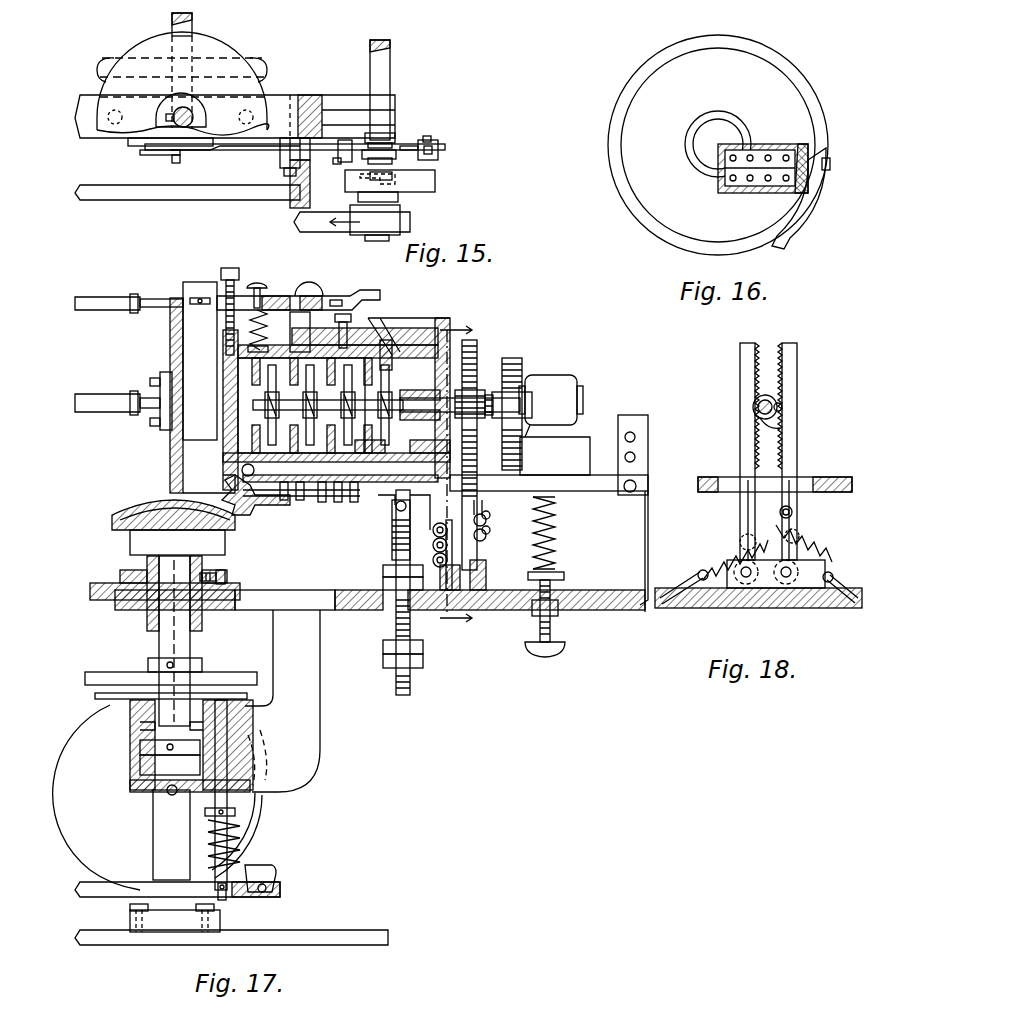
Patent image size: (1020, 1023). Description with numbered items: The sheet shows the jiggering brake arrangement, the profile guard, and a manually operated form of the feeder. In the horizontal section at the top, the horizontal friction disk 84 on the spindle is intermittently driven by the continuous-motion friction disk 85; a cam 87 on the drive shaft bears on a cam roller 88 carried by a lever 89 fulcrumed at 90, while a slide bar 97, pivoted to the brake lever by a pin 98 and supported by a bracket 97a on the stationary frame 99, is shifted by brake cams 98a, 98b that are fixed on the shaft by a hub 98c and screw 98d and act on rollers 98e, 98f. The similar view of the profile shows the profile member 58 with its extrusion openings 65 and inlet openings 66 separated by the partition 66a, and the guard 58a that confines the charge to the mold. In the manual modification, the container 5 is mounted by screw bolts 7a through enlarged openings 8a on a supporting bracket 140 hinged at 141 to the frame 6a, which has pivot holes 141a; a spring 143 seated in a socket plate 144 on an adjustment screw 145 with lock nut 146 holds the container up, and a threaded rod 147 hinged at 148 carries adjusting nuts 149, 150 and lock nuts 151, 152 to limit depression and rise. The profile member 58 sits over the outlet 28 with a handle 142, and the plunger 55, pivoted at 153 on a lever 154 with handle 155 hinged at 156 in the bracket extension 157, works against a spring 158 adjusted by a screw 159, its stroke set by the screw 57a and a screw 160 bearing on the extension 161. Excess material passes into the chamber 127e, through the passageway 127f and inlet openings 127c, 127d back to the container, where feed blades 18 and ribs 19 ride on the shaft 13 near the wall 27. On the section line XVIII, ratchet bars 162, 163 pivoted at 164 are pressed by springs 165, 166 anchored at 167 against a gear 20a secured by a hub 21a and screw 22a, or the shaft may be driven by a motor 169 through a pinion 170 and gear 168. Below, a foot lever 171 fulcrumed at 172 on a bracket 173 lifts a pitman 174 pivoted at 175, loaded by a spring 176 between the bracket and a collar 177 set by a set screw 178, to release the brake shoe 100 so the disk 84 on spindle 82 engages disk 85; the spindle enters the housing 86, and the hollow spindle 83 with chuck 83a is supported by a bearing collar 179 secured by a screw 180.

In FIG. 15, the horizontal friction disk 84 is at (213, 50).
In FIG. 17, the horizontal friction disk 84 is at (248, 668).
In FIG. 15, the continuous-motion friction disk 85 is at (262, 62).
In FIG. 17, the continuous-motion friction disk 85 is at (275, 832).
In FIG. 15, the stationary frame 99 is at (282, 97).
In FIG. 15, the pin 98 is at (170, 158).
In FIG. 15, the slide bar 97 is at (228, 150).
In FIG. 15, the bracket 97a is at (280, 163).
In FIG. 15, the brake cam 98a is at (432, 155).
In FIG. 15, the brake cam 98b is at (398, 148).
In FIG. 15, the hub 98c is at (390, 136).
In FIG. 15, the screw 98d is at (385, 118).
In FIG. 15, the roller 98e is at (335, 160).
In FIG. 15, the roller 98f is at (440, 148).
In FIG. 15, the cam roller 88 is at (395, 185).
In FIG. 15, the cam 87 is at (425, 200).
In FIG. 15, the lever 89 is at (270, 168).
In FIG. 15, the fulcrum 90 is at (292, 205).
In FIG. 16, the profile member 58 is at (722, 186).
In FIG. 17, the profile member 58 is at (180, 336).
In FIG. 16, the retaining member or guard 58a is at (785, 242).
In FIG. 16, the inlet openings 66 is at (768, 150).
In FIG. 16, the wall or partition 66a is at (745, 160).
In FIG. 16, the feed or extrusion openings 65 is at (752, 182).
In FIG. 17, the handle portion 155 is at (95, 297).
In FIG. 17, the lever 154 is at (160, 300).
In FIG. 17, the pivot 153 is at (198, 298).
In FIG. 17, the screw 57a is at (232, 268).
In FIG. 17, the screw 159 is at (258, 283).
In FIG. 17, the spring 158 is at (288, 310).
In FIG. 17, the bifurcated bracket extension 157 is at (312, 296).
In FIG. 17, the hinge 156 is at (320, 296).
In FIG. 17, the extension 161 is at (348, 298).
In FIG. 17, the screw 160 is at (352, 318).
In FIG. 17, the container 5 is at (438, 297).
In FIG. 17, the housing wall 27 is at (336, 393).
In FIG. 17, the section line XVIII— XVIII is at (468, 466).
In FIG. 17, the feed blades 18 is at (276, 355).
In FIG. 17, the ribs 19 is at (372, 372).
In FIG. 17, the shaft 13 is at (418, 400).
In FIG. 17, the ratchet bar 162 is at (478, 358).
In FIG. 18, the ratchet bar 162 is at (740, 355).
In FIG. 17, the gear 168 is at (515, 366).
In FIG. 17, the pinion 170 is at (520, 392).
In FIG. 17, the motor 169 is at (568, 390).
In FIG. 17, the plunger 55 is at (200, 361).
In FIG. 17, the handle 142 is at (105, 395).
In FIG. 17, the outlet 28 is at (240, 408).
In FIG. 17, the inlet opening 127d is at (402, 443).
In FIG. 17, the pivot holes 141a is at (636, 438).
In FIG. 17, the pivot 141 is at (638, 485).
In FIG. 17, the supporting bracket 140 is at (583, 482).
In FIG. 18, the supporting bracket 140 is at (708, 492).
In FIG. 17, the spring 143 is at (556, 530).
In FIG. 17, the passageway 127f is at (298, 495).
In FIG. 17, the inlet opening 127c is at (342, 495).
In FIG. 17, the chamber 127e is at (248, 495).
In FIG. 17, the screw bolts 7a is at (378, 496).
In FIG. 17, the enlarged openings 8a is at (420, 496).
In FIG. 17, the hinge 148 is at (392, 540).
In FIG. 17, the lock nut 151 is at (383, 572).
In FIG. 17, the adjusting nut 149 is at (383, 584).
In FIG. 17, the pivot 164 is at (482, 578).
In FIG. 18, the pivot 164 is at (790, 578).
In FIG. 17, the socket plate 144 is at (560, 575).
In FIG. 17, the frame 6a is at (645, 536).
In FIG. 18, the frame 6a is at (712, 608).
In FIG. 17, the chuck 83a is at (128, 553).
In FIG. 17, the bearing collar 179 is at (215, 574).
In FIG. 17, the screw 180 is at (225, 577).
In FIG. 17, the hollow jigger spindle 83 is at (147, 620).
In FIG. 17, the spindle 82 is at (190, 658).
In FIG. 17, the brake shoe 100 is at (248, 695).
In FIG. 17, the pitman 174 is at (230, 728).
In FIG. 17, the housing 86 is at (135, 790).
In FIG. 17, the set screw 178 is at (208, 820).
In FIG. 17, the collar 177 is at (235, 812).
In FIG. 17, the spring 176 is at (242, 848).
In FIG. 17, the bracket 173 is at (272, 872).
In FIG. 17, the foot lever 171 is at (96, 890).
In FIG. 17, the pivot 175 is at (222, 897).
In FIG. 17, the fulcrum 172 is at (262, 897).
In FIG. 17, the threaded rod 147 is at (396, 626).
In FIG. 17, the adjusting nut 150 is at (416, 650).
In FIG. 17, the lock nut 152 is at (416, 664).
In FIG. 17, the lock nut 146 is at (532, 612).
In FIG. 17, the adjustment screw 145 is at (552, 626).
In FIG. 18, the ratchet bar 163 is at (797, 355).
In FIG. 18, the hub 21a is at (752, 404).
In FIG. 18, the screw 22a is at (780, 400).
In FIG. 18, the gear 20a is at (775, 426).
In FIG. 18, the spring 166 is at (728, 556).
In FIG. 18, the spring 165 is at (806, 550).
In FIG. 18, the spring anchorage 167 is at (690, 578).